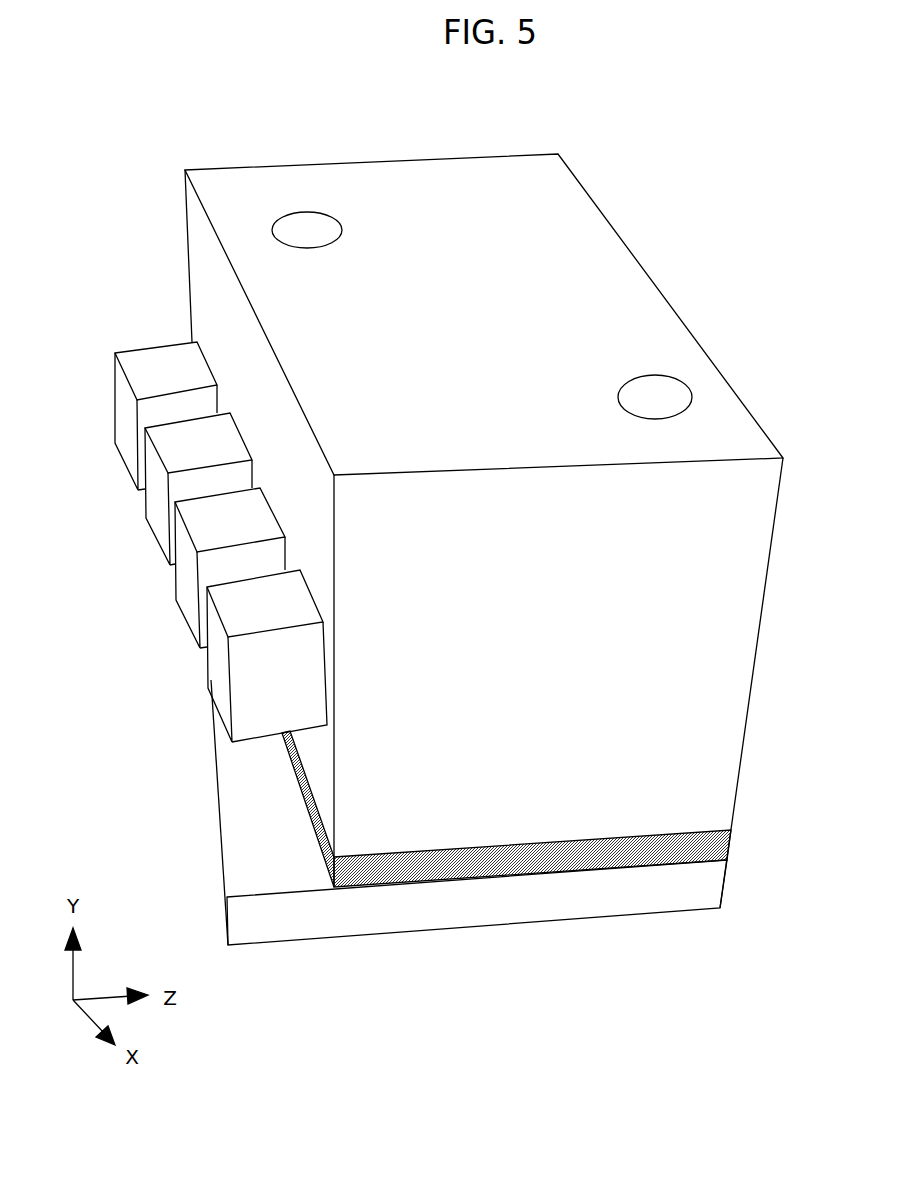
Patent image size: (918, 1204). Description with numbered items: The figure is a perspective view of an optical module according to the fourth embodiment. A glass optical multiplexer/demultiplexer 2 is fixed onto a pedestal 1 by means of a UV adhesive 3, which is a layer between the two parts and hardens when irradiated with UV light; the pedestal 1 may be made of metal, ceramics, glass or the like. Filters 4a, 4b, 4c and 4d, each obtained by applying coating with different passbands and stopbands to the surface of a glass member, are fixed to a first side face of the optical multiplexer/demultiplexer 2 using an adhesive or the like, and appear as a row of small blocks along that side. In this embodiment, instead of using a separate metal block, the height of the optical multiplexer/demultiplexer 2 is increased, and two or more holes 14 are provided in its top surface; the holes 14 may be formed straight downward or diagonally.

The pedestal 1 is at (673, 897).
The optical multiplexer/demultiplexer 2 is at (720, 708).
The UV adhesive 3 is at (730, 848).
The holes 14 is at (313, 223).
The filter 4a is at (217, 678).
The filter 4b is at (185, 590).
The filter 4c is at (158, 512).
The filter 4d is at (127, 425).